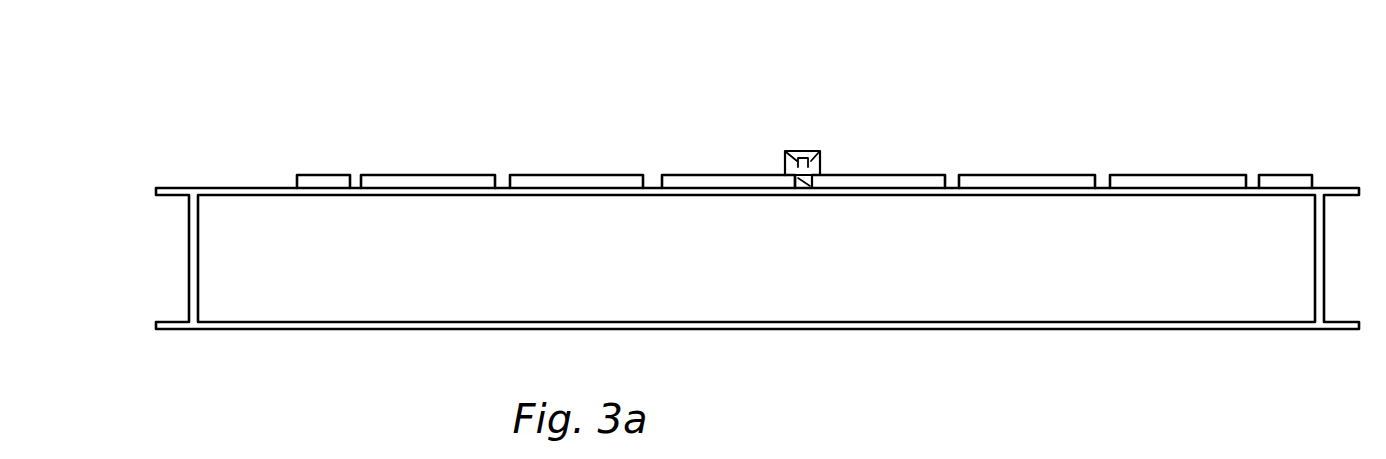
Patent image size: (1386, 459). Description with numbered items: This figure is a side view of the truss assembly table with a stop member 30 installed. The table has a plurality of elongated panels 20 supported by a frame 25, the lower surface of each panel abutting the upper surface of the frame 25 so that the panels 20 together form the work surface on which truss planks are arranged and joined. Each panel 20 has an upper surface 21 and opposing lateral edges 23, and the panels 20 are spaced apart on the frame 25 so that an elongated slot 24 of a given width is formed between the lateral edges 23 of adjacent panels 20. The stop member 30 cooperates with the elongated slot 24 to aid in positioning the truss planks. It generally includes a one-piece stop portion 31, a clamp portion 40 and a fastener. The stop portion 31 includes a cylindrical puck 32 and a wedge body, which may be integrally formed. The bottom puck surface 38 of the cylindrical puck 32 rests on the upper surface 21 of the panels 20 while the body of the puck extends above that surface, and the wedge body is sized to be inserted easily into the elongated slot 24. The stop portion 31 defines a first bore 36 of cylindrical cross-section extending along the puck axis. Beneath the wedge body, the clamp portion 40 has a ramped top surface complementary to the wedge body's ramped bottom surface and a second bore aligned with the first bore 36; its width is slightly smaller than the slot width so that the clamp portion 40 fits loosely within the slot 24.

The elongated panels 20 is at (531, 183).
The upper surface 21 is at (628, 175).
The lateral edges 23 is at (652, 177).
The elongated slot 24 is at (951, 185).
The frame 25 is at (368, 302).
The stop member 30 is at (802, 125).
The stop portion 31 is at (822, 160).
The cylindrical puck 32 is at (820, 152).
The first bore 36 is at (786, 152).
The bottom puck surface 38 is at (822, 180).
The clamp portion 40 is at (806, 189).